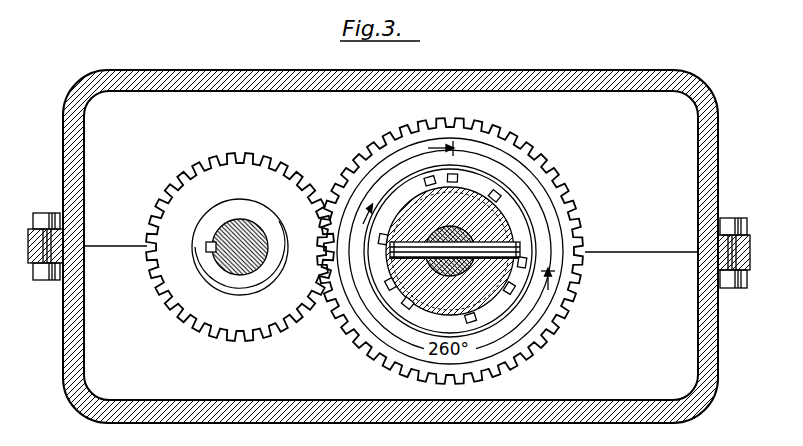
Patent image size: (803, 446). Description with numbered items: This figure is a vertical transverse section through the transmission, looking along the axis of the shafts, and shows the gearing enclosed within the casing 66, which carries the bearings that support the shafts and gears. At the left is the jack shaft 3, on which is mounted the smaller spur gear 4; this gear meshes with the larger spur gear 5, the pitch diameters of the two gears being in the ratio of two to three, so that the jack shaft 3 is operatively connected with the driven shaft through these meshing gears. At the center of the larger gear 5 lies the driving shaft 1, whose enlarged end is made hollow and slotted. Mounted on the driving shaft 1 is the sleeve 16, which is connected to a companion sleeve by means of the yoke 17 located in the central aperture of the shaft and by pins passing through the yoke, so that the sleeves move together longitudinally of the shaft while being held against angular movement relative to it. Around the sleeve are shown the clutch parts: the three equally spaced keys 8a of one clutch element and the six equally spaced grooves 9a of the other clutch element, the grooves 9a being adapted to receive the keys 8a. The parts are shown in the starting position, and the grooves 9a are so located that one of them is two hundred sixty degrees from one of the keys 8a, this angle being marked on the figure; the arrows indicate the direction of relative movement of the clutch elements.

The driving shaft 1 is at (507, 224).
The jack shaft 3 is at (225, 226).
The spur gear 4 is at (267, 158).
The spur gear 5 is at (357, 160).
The keys 8a is at (457, 176).
The grooves 9a is at (427, 176).
The sleeve 16 is at (503, 200).
The yoke 17 is at (523, 297).
The casing 66 is at (637, 74).